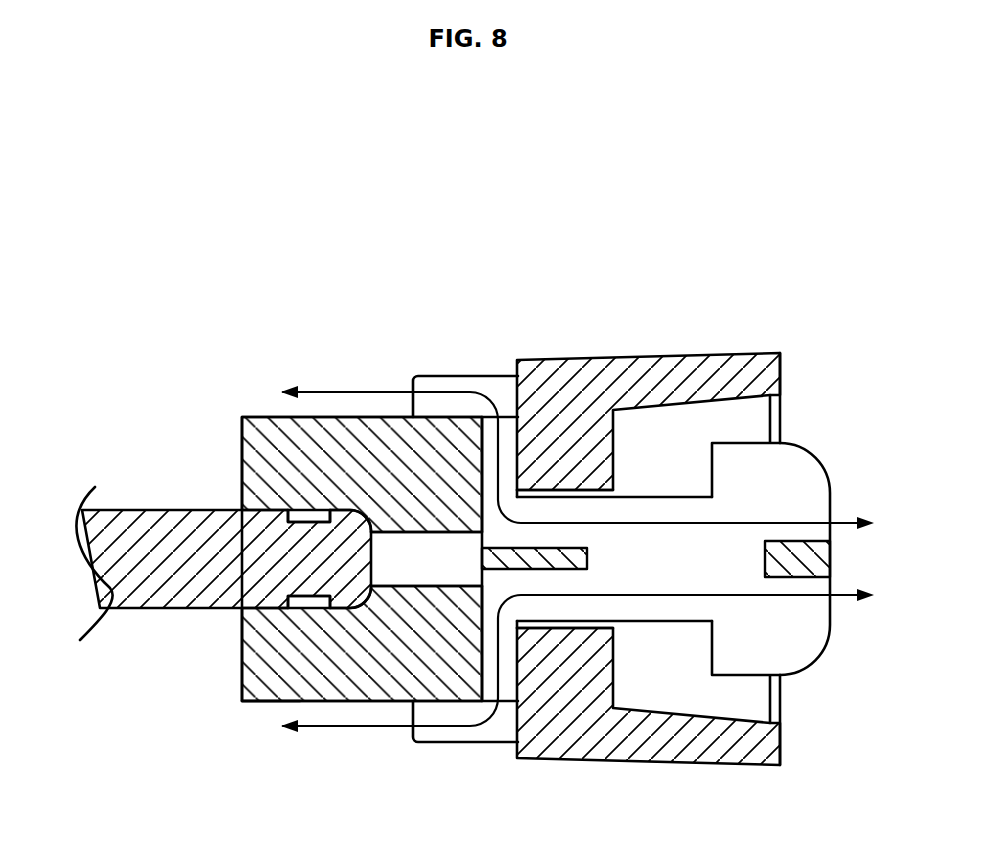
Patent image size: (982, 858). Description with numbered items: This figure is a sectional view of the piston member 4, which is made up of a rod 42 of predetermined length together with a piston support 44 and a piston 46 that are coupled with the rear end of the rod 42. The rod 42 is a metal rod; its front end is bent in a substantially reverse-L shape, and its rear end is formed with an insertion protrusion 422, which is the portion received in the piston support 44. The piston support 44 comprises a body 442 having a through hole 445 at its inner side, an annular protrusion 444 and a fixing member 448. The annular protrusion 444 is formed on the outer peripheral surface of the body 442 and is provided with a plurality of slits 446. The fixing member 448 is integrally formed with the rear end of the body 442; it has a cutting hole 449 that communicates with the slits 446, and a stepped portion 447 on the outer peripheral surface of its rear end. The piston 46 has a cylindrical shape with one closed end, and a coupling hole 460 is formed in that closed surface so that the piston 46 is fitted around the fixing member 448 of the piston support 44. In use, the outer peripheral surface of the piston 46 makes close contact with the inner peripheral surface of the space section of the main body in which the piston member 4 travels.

The piston member 4 is at (678, 276).
The rod 42 is at (151, 509).
The insertion protrusion 422 is at (348, 603).
The piston support 44 is at (247, 408).
The body 442 is at (263, 704).
The annular protrusion 444 is at (428, 375).
The through hole 445 is at (414, 551).
The slits 446 is at (493, 386).
The piston 46 is at (735, 347).
The stepped portion 447 is at (713, 648).
The fixing member 448 is at (801, 673).
The cutting hole 449 is at (657, 555).
The coupling hole 460 is at (589, 624).